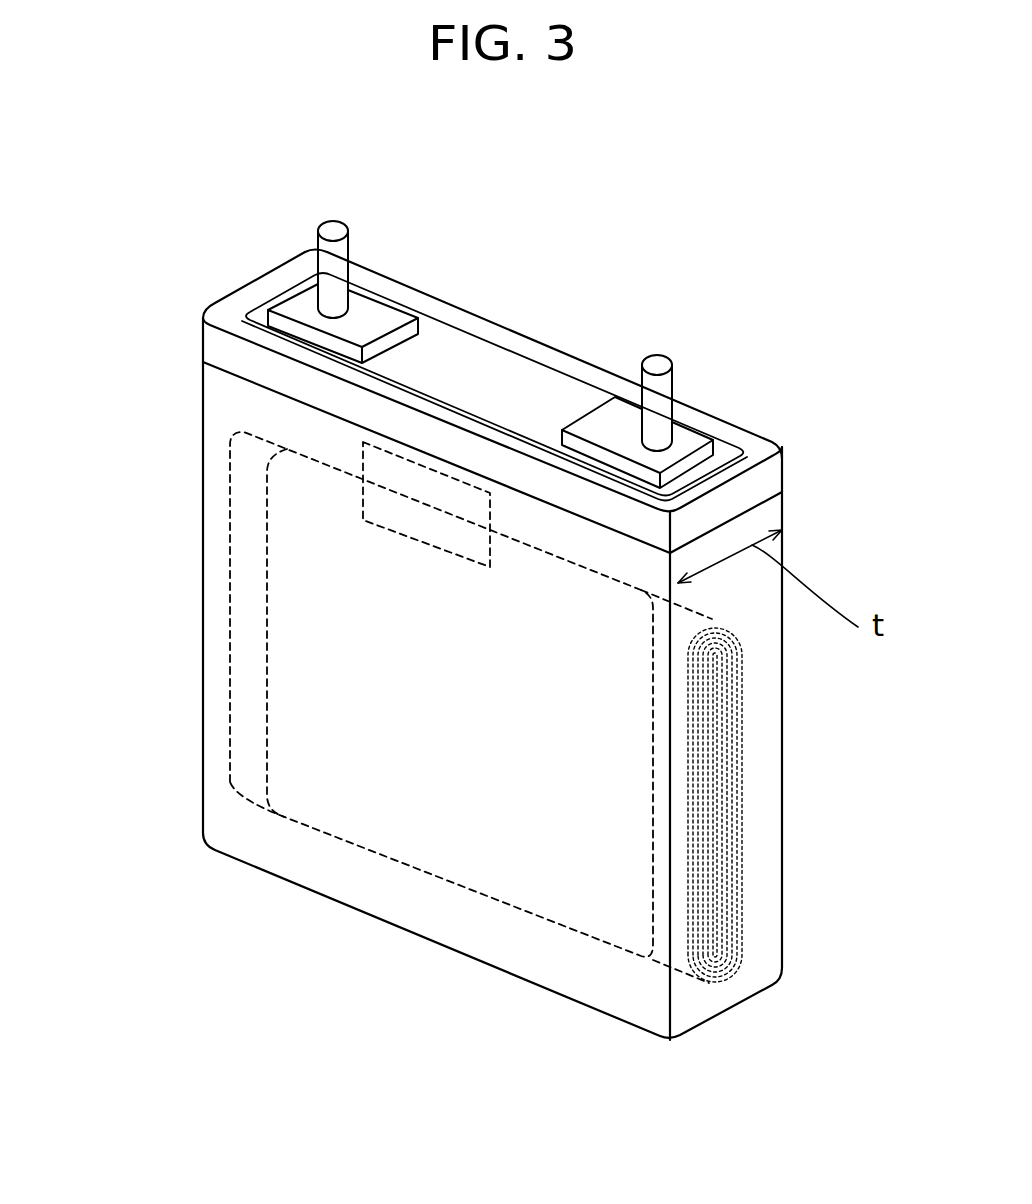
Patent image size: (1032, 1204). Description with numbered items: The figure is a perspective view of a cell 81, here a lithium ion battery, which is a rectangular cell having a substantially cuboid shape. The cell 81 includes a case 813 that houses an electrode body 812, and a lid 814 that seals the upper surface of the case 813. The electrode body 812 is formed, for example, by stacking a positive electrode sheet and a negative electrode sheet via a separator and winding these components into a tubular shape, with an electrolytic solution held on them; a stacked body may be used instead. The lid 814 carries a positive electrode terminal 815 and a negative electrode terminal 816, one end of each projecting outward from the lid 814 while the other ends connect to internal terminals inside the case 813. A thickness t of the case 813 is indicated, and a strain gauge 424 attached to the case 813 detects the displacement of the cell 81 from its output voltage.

The cell 81 is at (657, 249).
The electrode body 812 is at (277, 557).
The case 813 is at (345, 883).
The lid 814 is at (757, 444).
The positive electrode terminal 815 is at (333, 230).
The negative electrode terminal 816 is at (657, 362).
The strain gauge 424 is at (376, 509).